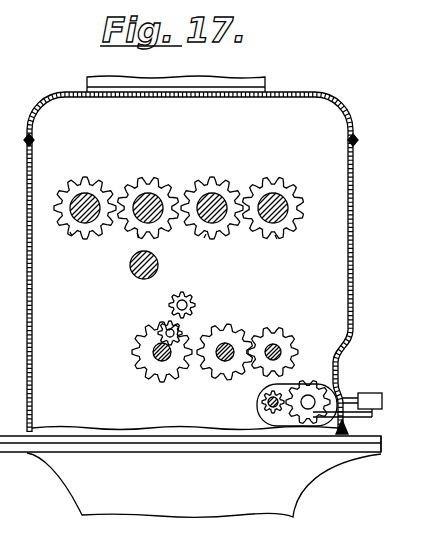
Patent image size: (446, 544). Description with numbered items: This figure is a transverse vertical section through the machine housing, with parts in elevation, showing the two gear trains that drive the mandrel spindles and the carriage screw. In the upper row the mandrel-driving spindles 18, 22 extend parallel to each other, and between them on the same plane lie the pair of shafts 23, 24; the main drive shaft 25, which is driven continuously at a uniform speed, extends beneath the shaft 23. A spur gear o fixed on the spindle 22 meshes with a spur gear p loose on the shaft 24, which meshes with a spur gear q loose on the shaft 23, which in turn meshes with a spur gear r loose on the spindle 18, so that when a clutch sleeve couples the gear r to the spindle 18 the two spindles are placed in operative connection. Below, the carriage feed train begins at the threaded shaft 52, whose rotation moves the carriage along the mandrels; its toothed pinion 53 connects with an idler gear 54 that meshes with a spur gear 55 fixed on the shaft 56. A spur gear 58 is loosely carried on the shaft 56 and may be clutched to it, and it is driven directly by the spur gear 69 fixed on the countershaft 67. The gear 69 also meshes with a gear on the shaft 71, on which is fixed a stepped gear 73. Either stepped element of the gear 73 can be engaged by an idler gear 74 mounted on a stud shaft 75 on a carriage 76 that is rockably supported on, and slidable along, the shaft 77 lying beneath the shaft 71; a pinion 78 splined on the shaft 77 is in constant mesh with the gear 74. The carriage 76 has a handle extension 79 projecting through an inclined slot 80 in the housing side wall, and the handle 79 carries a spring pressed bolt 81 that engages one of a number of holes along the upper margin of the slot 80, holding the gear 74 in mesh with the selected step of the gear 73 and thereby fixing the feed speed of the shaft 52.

The spindle 18 is at (88, 200).
The shaft 23 is at (148, 200).
The shaft 24 is at (213, 200).
The spindle 22 is at (285, 185).
The spur gear r is at (70, 232).
The spur gear q is at (137, 233).
The spur gear p is at (206, 234).
The spur gear o is at (275, 235).
The main drive shaft 25 is at (131, 269).
The threaded shaft 52 is at (190, 303).
The toothed pinion 53 is at (175, 300).
The idler gear 54 is at (139, 324).
The spur gear 55 is at (160, 333).
The shaft 56 is at (144, 361).
The spur gear 58 is at (150, 370).
The countershaft 67 is at (228, 348).
The spur gear 69 is at (225, 340).
The shaft 71 is at (276, 349).
The stepped gear 73 is at (288, 337).
The idler gear 74 is at (303, 390).
The stud shaft 75 is at (310, 414).
The carriage 76 is at (287, 421).
The shaft 77 is at (266, 407).
The pinion 78 is at (252, 407).
The handle extension 79 is at (362, 418).
The inclined slot 80 is at (343, 440).
The spring pressed bolt 81 is at (361, 393).